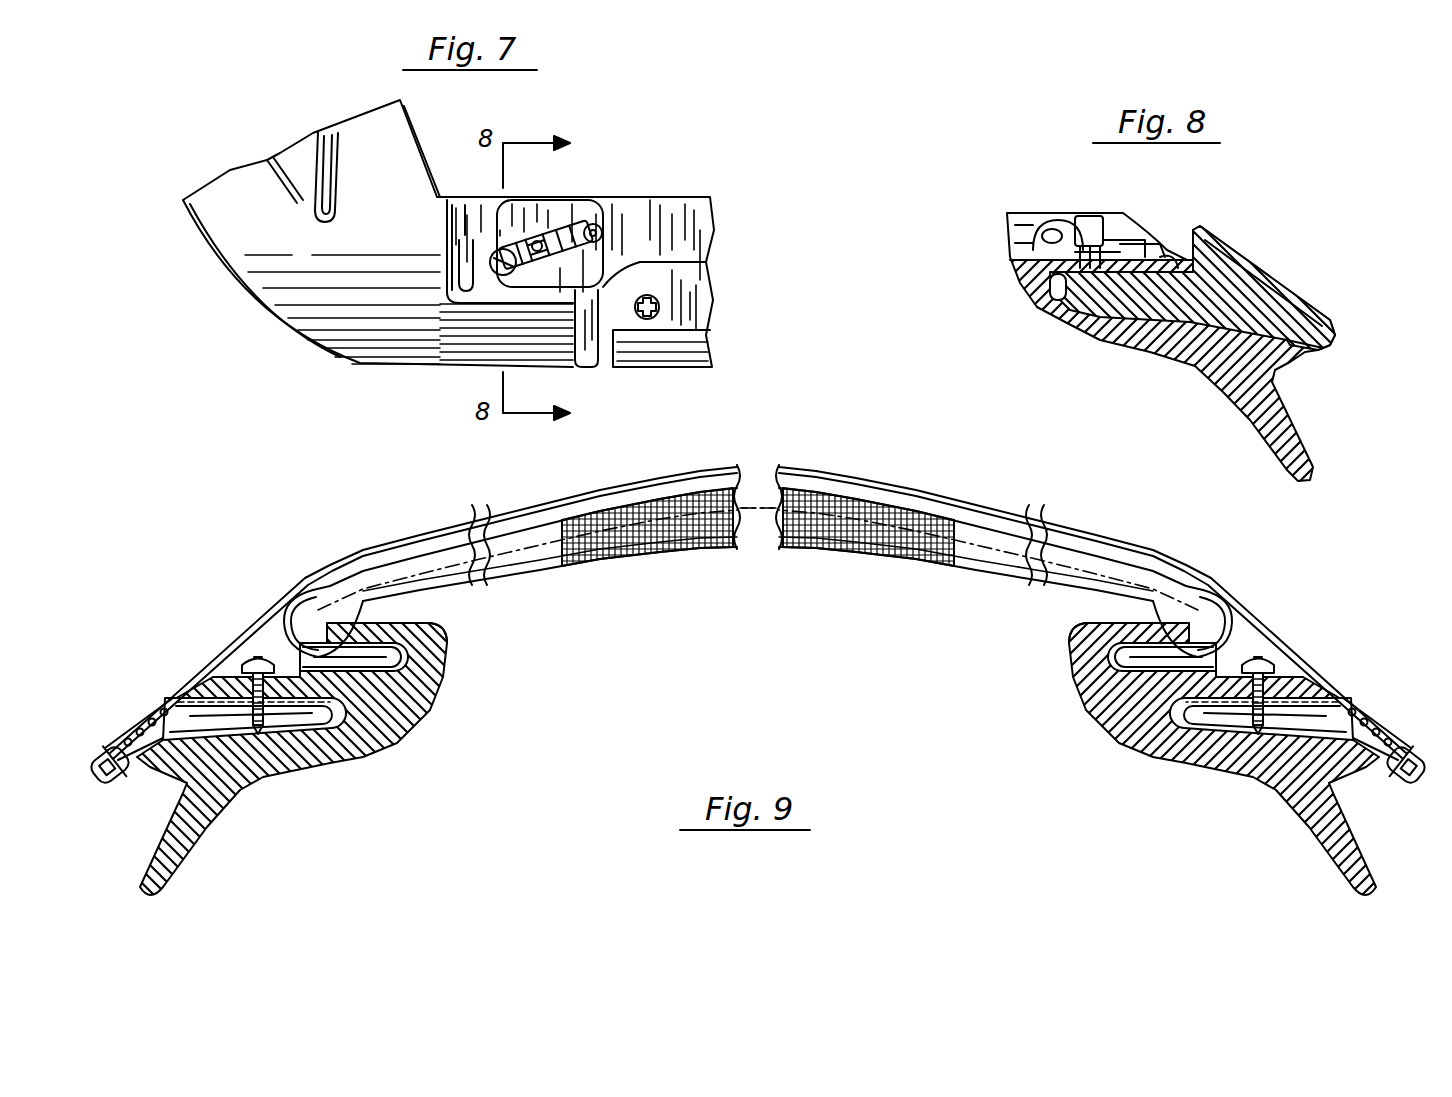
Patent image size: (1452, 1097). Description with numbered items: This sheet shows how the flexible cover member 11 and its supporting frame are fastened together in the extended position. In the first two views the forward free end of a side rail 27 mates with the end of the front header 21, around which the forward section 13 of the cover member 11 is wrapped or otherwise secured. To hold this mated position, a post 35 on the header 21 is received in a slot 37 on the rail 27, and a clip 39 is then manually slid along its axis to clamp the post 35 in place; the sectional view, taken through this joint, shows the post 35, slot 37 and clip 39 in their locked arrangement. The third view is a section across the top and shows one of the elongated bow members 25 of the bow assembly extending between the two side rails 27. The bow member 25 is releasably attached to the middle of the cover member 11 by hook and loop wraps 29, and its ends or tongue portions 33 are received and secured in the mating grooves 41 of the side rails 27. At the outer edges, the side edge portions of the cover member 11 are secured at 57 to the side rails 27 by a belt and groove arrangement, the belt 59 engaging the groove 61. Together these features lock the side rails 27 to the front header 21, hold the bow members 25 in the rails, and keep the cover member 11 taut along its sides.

In FIG. 9, the cover member 11 is at (268, 590).
In FIG. 8, the forward section 13 is at (1263, 263).
In FIG. 7, the front header 21 is at (322, 267).
In FIG. 9, the bow members 25 is at (523, 547).
In FIG. 7, the side rails 27 is at (670, 195).
In FIG. 8, the side rails 27 is at (1033, 317).
In FIG. 9, the side rails 27 is at (297, 773).
In FIG. 9, the hook and loop wraps 29 is at (647, 530).
In FIG. 9, the tongue portions 33 is at (360, 657).
In FIG. 7, the post 35 is at (472, 237).
In FIG. 8, the post 35 is at (1120, 217).
In FIG. 7, the slot 37 is at (497, 227).
In FIG. 8, the slot 37 is at (1177, 243).
In FIG. 7, the clip 39 is at (569, 200).
In FIG. 8, the clip 39 is at (1150, 243).
In FIG. 9, the grooves 41 is at (447, 660).
In FIG. 9, the securing location 57 is at (86, 745).
In FIG. 9, the belt 59 is at (137, 742).
In FIG. 9, the groove 61 is at (185, 700).